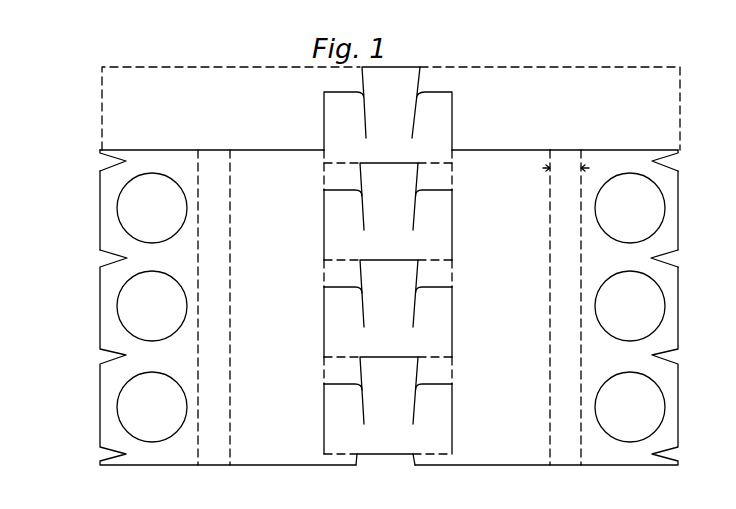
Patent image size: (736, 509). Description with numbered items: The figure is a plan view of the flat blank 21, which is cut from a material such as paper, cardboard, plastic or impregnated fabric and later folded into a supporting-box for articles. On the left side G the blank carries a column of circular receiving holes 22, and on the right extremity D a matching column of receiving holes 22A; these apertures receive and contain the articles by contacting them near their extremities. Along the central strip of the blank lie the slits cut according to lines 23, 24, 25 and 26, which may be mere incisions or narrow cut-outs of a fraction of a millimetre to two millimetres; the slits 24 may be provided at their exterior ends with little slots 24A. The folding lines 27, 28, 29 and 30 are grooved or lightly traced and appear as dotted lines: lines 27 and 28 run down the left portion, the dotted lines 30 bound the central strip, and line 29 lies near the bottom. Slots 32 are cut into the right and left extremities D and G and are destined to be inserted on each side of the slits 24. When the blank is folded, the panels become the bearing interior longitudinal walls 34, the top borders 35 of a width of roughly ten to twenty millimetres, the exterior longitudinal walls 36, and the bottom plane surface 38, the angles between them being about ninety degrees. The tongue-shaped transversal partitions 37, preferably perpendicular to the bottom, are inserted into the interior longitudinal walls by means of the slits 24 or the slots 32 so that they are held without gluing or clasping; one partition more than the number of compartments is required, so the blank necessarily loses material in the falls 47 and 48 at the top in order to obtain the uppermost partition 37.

The blank 21 is at (251, 466).
The receiving holes 22 is at (130, 217).
The receiving holes 22A is at (647, 320).
The slit line 23 is at (387, 163).
The slits 24 is at (411, 213).
The little slots 24A is at (420, 289).
The slit line 25 is at (343, 192).
The slit line 26 is at (324, 237).
The folding line 27 is at (206, 322).
The folding line 28 is at (231, 344).
The folding line 29 is at (432, 453).
The folding lines 30 is at (324, 268).
The slots 32 is at (672, 258).
The bearing interior longitudinal walls 34 is at (624, 158).
The top borders 35 is at (565, 157).
The exterior longitudinal walls 36 is at (490, 156).
The transversal partitions 37 is at (403, 95).
The bottom plane surface 38 is at (432, 466).
The fall 47 is at (217, 87).
The fall 48 is at (603, 82).
The left side G is at (100, 181).
The right extremity D is at (680, 214).